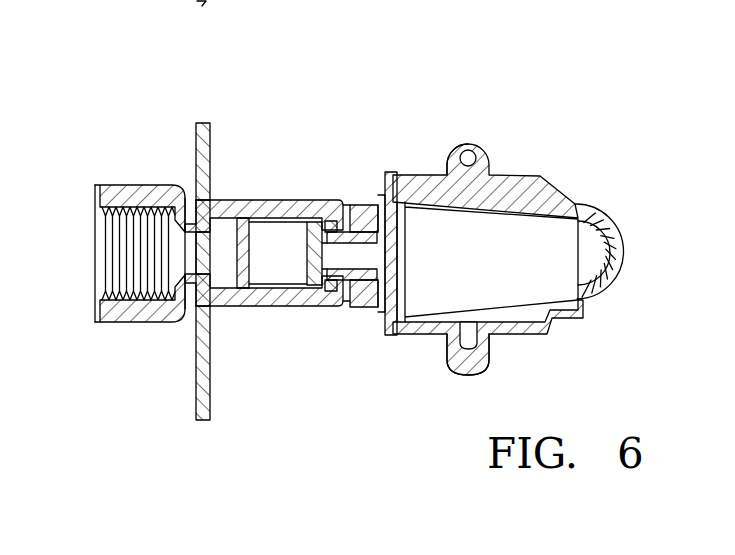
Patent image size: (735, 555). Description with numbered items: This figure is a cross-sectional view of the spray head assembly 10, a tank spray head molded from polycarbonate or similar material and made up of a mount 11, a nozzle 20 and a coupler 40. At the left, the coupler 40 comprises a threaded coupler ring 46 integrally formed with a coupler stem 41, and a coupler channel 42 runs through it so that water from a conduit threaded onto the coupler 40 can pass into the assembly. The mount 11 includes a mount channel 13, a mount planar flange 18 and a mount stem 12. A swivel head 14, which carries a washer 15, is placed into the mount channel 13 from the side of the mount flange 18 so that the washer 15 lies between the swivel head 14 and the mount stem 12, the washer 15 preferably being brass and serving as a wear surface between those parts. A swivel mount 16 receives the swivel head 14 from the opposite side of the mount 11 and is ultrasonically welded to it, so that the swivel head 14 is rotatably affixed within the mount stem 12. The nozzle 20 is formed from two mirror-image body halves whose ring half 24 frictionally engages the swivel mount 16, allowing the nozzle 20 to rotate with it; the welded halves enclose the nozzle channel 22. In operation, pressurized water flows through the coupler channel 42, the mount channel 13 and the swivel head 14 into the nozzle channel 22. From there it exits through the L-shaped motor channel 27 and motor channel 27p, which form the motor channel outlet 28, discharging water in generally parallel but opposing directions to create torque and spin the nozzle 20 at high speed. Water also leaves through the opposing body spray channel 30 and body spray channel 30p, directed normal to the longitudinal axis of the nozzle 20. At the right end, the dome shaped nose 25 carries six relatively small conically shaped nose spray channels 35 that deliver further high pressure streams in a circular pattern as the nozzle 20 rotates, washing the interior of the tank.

The spray head assembly 10 is at (436, 72).
The mount 11 is at (222, 118).
The mount stem 12 is at (288, 200).
The mount channel 13 is at (277, 301).
The swivel head 14 is at (320, 303).
The washer 15 is at (328, 210).
The swivel mount 16 is at (370, 203).
The mount planar flange 18 is at (212, 168).
The nozzle 20 is at (548, 252).
The nozzle channel 22 is at (447, 272).
The ring half 24 is at (362, 309).
The dome shaped nose 25 is at (644, 243).
The motor channel 27 is at (468, 352).
The motor channel 27p is at (448, 145).
The motor channel outlet 28 is at (472, 142).
The body spray channel 30 is at (517, 176).
The body spray channel 30p is at (518, 332).
The nose spray channel 35 is at (604, 208).
The coupler 40 is at (142, 158).
The coupler stem 41 is at (187, 192).
The coupler channel 42 is at (212, 250).
The threaded coupler ring 46 is at (103, 185).